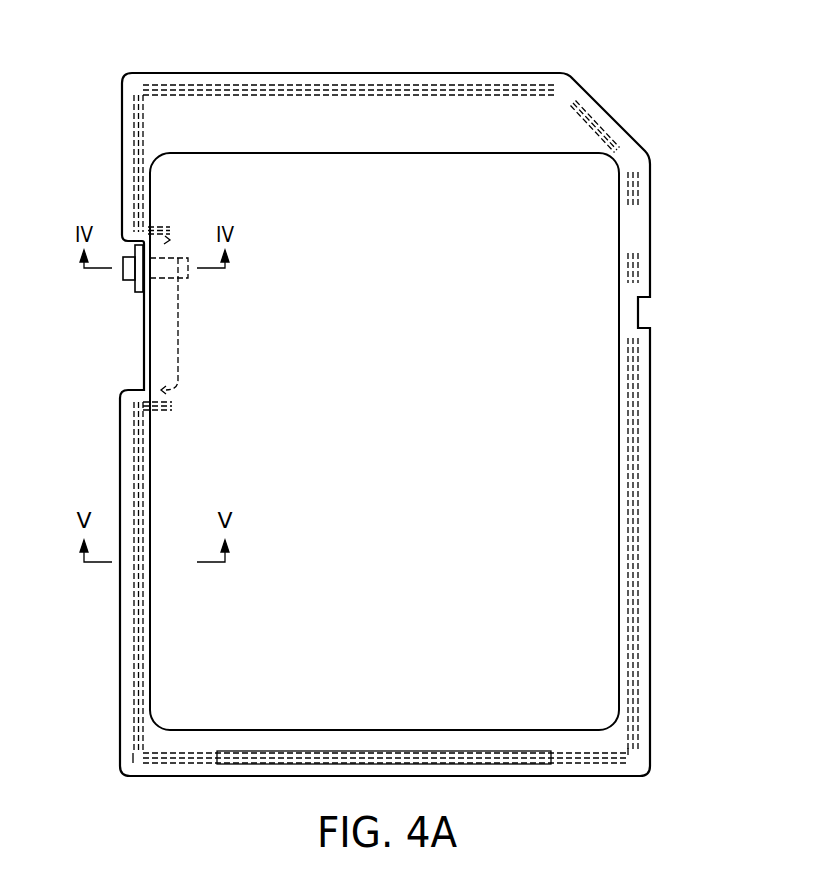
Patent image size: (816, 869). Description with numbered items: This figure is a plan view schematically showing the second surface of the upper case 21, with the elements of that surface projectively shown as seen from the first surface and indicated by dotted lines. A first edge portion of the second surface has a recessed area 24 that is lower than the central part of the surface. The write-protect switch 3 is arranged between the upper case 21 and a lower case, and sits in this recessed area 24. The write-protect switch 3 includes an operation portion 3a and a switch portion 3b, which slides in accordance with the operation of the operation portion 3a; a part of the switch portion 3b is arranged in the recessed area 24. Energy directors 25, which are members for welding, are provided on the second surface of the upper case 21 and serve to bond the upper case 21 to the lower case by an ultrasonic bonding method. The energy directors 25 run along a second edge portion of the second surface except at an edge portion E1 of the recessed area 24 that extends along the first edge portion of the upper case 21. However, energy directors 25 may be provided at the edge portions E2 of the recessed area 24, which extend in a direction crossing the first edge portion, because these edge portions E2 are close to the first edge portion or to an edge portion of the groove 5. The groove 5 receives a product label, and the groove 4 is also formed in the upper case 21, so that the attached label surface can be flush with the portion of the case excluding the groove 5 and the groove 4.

The upper case 21 is at (467, 57).
The energy directors 25 is at (172, 95).
The write-protect switch 3 is at (118, 251).
The operation portion 3a is at (124, 270).
The switch portion 3b is at (188, 278).
The recessed area 24 is at (151, 358).
The groove 5 is at (588, 670).
The groove 4 is at (535, 765).
The edge portion E1 is at (179, 326).
The edge portions E2 is at (168, 240).